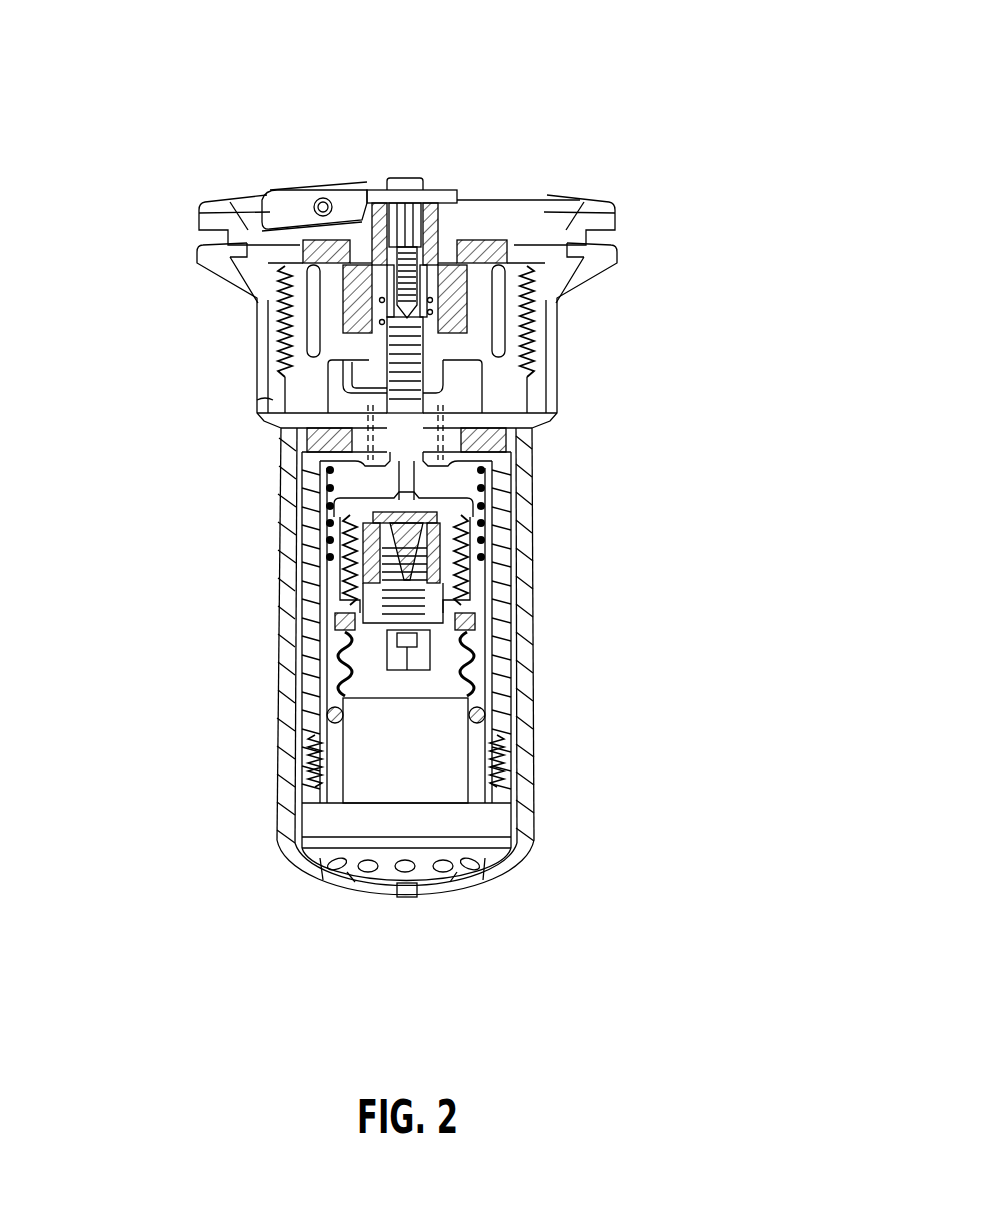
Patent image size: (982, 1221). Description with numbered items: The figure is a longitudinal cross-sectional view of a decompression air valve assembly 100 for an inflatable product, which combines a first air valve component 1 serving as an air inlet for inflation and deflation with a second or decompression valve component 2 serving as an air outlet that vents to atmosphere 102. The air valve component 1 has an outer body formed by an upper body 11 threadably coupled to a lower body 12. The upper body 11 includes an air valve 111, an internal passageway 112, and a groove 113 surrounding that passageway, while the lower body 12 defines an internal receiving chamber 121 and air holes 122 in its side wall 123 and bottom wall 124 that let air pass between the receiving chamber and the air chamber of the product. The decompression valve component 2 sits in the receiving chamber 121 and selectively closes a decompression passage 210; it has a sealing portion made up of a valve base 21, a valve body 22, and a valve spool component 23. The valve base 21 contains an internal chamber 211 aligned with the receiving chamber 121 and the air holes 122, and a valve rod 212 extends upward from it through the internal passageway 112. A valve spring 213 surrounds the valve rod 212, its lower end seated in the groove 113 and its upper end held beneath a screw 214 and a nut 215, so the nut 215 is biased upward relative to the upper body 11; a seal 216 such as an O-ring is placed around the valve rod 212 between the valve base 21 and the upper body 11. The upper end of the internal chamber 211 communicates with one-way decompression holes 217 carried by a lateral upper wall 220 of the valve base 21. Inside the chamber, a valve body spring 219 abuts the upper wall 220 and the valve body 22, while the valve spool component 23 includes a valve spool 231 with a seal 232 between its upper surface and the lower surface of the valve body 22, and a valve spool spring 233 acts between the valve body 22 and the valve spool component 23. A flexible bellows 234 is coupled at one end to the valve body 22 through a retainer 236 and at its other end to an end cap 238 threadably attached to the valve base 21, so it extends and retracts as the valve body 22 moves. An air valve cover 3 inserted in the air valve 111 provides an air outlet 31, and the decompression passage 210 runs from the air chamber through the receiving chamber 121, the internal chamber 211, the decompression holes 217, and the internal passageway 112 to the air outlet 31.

The decompression air valve assembly 100 is at (161, 96).
The atmosphere 102 is at (425, 87).
The air valve component 1 is at (192, 454).
The decompression valve component 2 is at (721, 311).
The air valve cover 3 is at (382, 190).
The air outlet 31 is at (410, 178).
The upper body 11 is at (284, 330).
The lower body 12 is at (287, 529).
The valve base 21 is at (298, 601).
The valve body 22 is at (473, 580).
The valve spool component 23 is at (652, 481).
The air valve 111 is at (430, 333).
The internal passageway 112 is at (442, 352).
The groove 113 is at (447, 330).
The internal receiving chamber 121 is at (467, 817).
The air holes 122 is at (405, 863).
The side wall 123 is at (278, 743).
The bottom wall 124 is at (427, 870).
The decompression passage 210 is at (472, 402).
The internal chamber 211 is at (380, 722).
The valve rod 212 is at (410, 385).
The valve spring 213 is at (208, 208).
The screw 214 is at (400, 240).
The nut 215 is at (388, 205).
The seal 216 is at (500, 452).
The one-way decompression holes 217 is at (370, 415).
The valve body spring 219 is at (465, 476).
The lateral upper wall 220 is at (484, 457).
The valve spool 231 is at (445, 535).
The seal 232 is at (445, 517).
The valve spool spring 233 is at (400, 602).
The bellows 234 is at (473, 683).
The retainer 236 is at (448, 590).
The end cap 238 is at (473, 767).